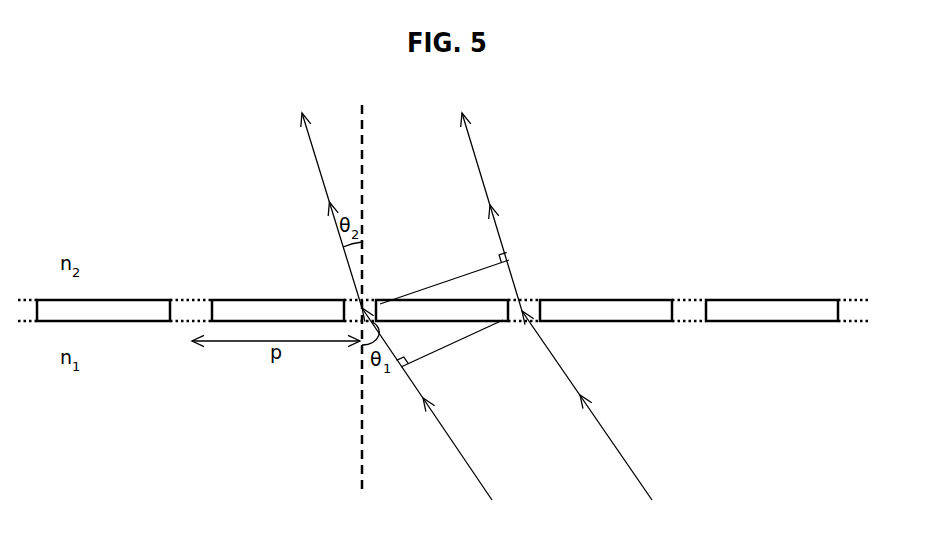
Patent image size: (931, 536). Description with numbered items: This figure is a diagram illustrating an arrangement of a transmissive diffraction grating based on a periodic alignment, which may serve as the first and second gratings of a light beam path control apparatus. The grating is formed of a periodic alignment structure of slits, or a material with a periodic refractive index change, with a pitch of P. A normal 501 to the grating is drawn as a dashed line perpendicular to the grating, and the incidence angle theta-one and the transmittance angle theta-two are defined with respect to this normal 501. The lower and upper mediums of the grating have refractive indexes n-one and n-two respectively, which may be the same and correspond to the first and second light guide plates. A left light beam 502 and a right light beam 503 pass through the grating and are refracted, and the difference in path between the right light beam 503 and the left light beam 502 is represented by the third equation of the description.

The normal 501 is at (362, 434).
The left light beam 502 is at (457, 446).
The right light beam 503 is at (613, 443).